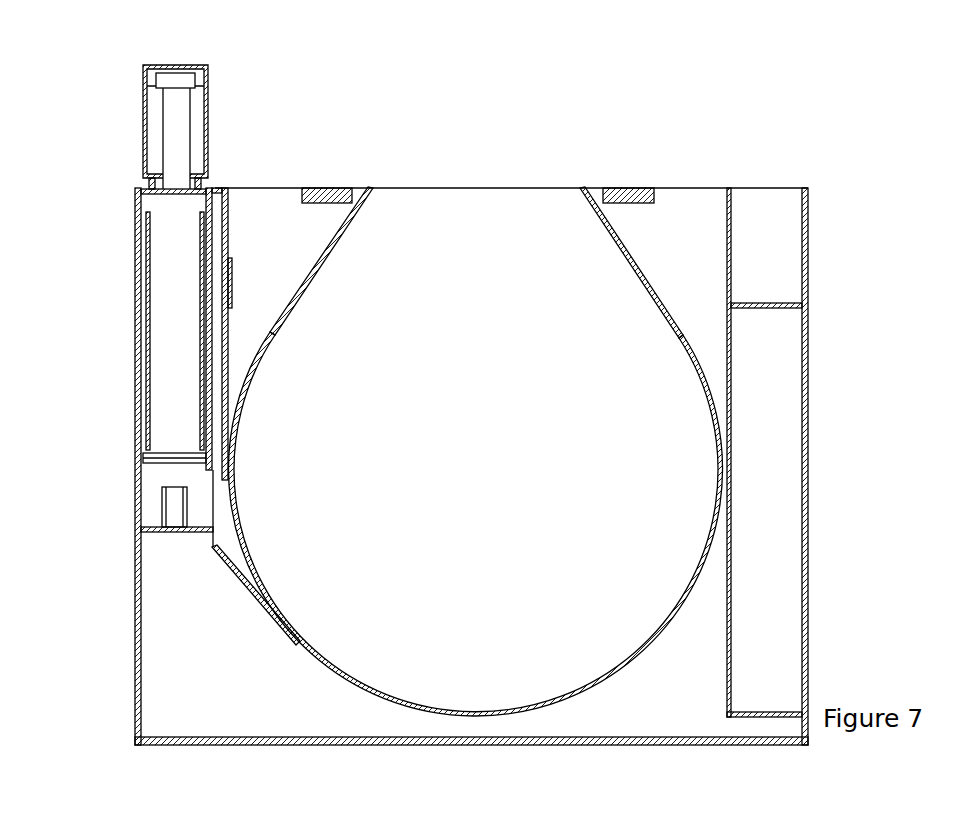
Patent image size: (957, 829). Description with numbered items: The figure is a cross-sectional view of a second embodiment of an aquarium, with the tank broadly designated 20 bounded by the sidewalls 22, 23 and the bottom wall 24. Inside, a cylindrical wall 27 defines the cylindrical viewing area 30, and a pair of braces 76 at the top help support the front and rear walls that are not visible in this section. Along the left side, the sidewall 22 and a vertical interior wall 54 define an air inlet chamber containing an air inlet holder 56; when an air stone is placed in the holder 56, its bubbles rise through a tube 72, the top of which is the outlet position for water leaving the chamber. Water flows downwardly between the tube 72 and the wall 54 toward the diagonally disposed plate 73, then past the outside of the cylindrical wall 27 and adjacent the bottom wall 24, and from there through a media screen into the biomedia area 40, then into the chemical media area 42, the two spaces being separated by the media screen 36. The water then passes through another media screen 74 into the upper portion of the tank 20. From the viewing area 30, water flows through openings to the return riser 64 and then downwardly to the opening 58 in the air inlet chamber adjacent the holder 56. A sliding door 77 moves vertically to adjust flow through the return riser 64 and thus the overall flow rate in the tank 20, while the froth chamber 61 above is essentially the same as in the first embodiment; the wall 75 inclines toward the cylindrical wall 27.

The tank 20 is at (790, 130).
The sidewall 22 is at (140, 535).
The sidewall 23 is at (808, 411).
The bottom wall 24 is at (612, 746).
The cylindrical wall 27 is at (372, 693).
The cylindrical viewing area 30 is at (490, 477).
The media screen 36 is at (740, 308).
The biomedia area 40 is at (786, 540).
The chemical media area 42 is at (790, 268).
The vertical interior wall 54 is at (215, 201).
The air inlet holder 56 is at (173, 518).
The opening 58 is at (225, 500).
The froth chamber 61 is at (225, 97).
The return riser 64 is at (229, 217).
The tube 72 is at (145, 302).
The diagonally disposed plate 73 is at (233, 577).
The media screen 74 is at (728, 223).
The inclined funnel wall 75 is at (647, 280).
The braces 76 is at (335, 197).
The sliding door 77 is at (232, 282).